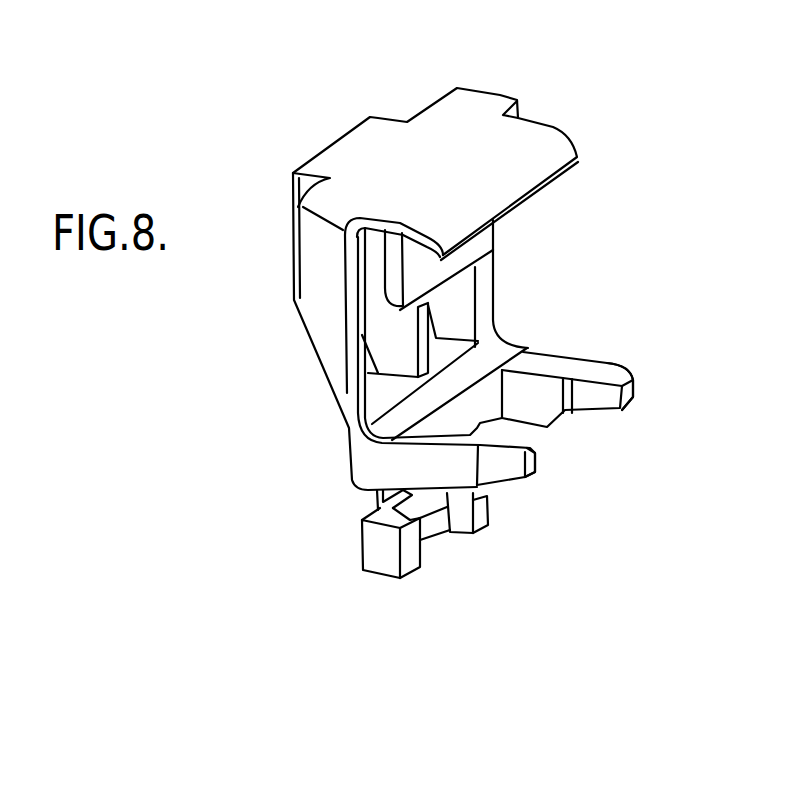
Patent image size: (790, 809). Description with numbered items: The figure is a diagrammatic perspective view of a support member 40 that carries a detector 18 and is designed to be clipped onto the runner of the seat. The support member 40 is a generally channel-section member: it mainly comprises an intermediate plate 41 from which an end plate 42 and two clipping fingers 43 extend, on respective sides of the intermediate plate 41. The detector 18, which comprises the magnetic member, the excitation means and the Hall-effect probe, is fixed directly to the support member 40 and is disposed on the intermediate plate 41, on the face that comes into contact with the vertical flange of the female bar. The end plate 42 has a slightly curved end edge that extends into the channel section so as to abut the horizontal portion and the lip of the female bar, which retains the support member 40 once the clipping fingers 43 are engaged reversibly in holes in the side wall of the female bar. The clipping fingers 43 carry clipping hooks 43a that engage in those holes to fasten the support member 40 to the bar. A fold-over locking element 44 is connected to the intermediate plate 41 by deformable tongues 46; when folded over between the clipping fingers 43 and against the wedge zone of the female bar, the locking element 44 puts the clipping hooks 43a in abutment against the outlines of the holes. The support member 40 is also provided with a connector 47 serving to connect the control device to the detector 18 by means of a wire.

The support member 40 is at (325, 139).
The intermediate plate 41 is at (330, 360).
The end plate 42 is at (543, 160).
The detector 18 is at (480, 243).
The clipping fingers 43 is at (542, 360).
The clipping hooks 43a is at (615, 377).
The fold-over locking element 44 is at (385, 550).
The deformable tongues 46 is at (377, 493).
The connector 47 is at (495, 93).